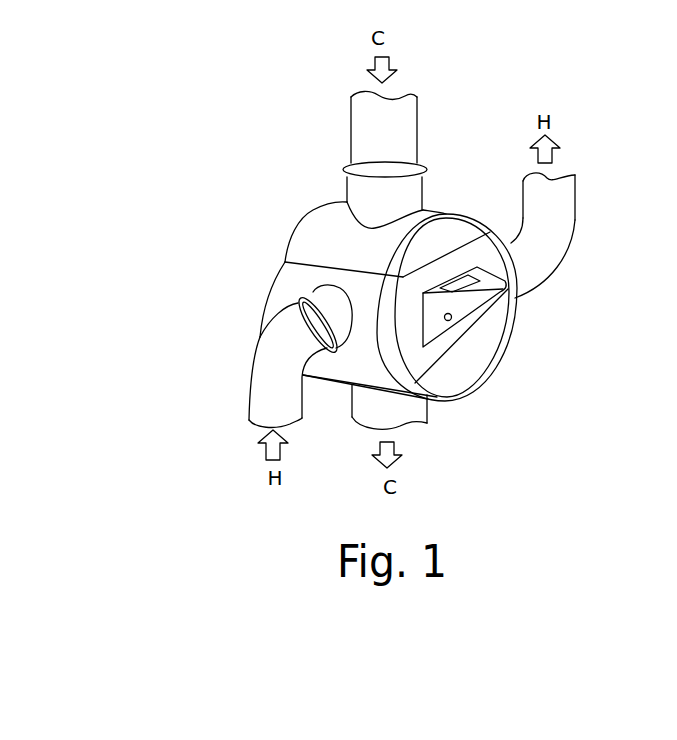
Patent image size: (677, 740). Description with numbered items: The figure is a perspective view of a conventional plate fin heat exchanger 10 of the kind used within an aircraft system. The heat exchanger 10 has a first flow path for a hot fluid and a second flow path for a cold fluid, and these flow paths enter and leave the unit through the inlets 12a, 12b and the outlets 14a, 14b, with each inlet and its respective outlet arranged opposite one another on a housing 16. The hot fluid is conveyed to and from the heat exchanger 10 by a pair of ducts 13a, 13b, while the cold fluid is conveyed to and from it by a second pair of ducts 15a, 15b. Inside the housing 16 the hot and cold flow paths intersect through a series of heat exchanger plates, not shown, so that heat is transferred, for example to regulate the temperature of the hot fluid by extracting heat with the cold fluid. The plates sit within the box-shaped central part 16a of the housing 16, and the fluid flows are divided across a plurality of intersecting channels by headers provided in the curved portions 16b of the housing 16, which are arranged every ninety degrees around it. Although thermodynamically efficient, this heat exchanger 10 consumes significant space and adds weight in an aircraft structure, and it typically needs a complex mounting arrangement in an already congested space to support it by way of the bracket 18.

The plate fin heat exchanger 10 is at (292, 223).
The inlet 12a is at (331, 350).
The inlet 12b is at (421, 166).
The duct 13a is at (265, 370).
The duct 13b is at (558, 228).
The outlet 14a is at (516, 298).
The outlet 14b is at (430, 402).
The duct 15a is at (352, 125).
The duct 15b is at (417, 430).
The housing 16 is at (285, 262).
The central part 16a is at (467, 342).
The curved portions 16b is at (506, 254).
The bracket 18 is at (487, 313).